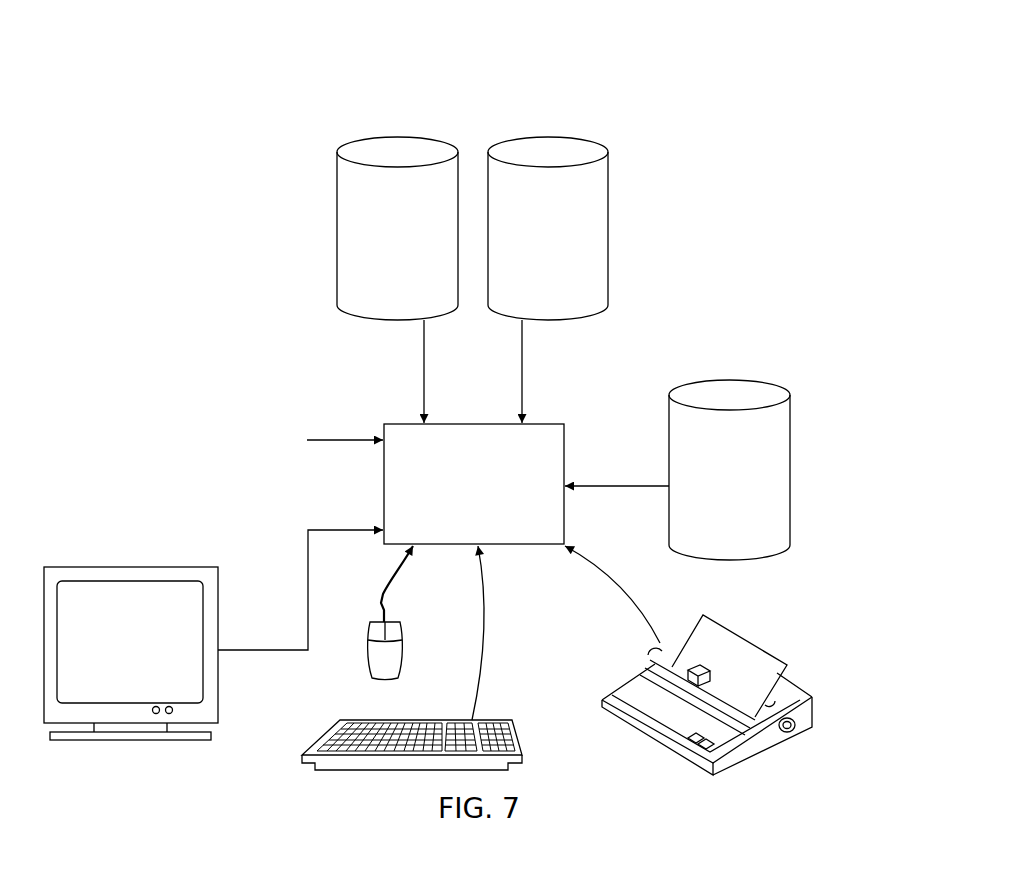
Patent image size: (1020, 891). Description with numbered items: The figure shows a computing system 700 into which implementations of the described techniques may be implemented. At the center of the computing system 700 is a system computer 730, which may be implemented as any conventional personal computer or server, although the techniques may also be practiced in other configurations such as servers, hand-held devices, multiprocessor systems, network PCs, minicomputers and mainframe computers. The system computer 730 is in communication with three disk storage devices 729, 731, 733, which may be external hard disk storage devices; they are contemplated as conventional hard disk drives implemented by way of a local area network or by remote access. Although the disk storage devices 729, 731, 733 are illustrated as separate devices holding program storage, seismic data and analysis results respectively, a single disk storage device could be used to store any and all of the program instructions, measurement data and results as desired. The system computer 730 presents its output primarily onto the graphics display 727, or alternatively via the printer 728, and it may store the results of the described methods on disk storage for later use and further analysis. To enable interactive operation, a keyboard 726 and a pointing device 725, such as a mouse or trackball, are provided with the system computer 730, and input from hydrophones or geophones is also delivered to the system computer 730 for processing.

The computing system 700 is at (505, 62).
The pointing device 725 is at (399, 620).
The keyboard 726 is at (487, 722).
The graphics display 727 is at (187, 567).
The printer 728 is at (742, 638).
The disk storage device 729 is at (728, 378).
The system computer 730 is at (547, 423).
The disk storage device 731 is at (547, 137).
The disk storage device 733 is at (397, 137).